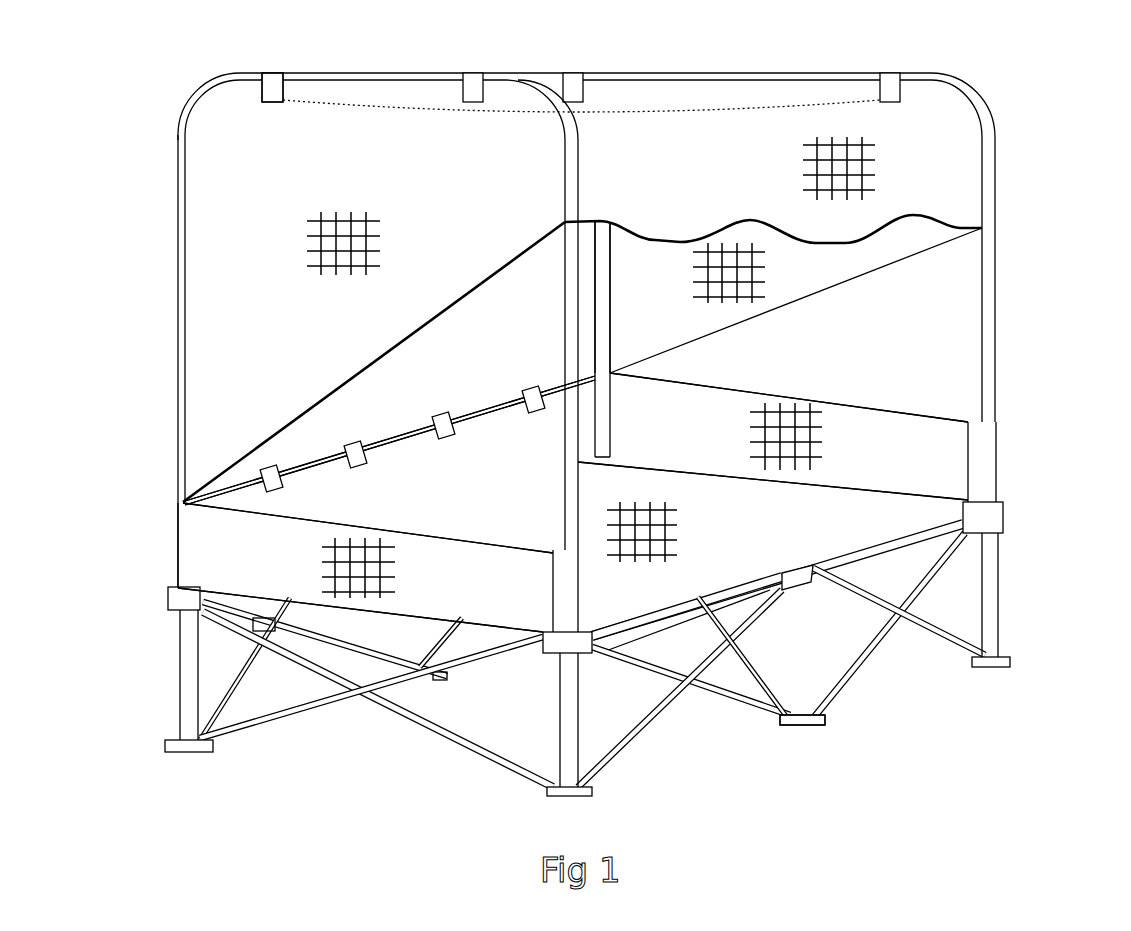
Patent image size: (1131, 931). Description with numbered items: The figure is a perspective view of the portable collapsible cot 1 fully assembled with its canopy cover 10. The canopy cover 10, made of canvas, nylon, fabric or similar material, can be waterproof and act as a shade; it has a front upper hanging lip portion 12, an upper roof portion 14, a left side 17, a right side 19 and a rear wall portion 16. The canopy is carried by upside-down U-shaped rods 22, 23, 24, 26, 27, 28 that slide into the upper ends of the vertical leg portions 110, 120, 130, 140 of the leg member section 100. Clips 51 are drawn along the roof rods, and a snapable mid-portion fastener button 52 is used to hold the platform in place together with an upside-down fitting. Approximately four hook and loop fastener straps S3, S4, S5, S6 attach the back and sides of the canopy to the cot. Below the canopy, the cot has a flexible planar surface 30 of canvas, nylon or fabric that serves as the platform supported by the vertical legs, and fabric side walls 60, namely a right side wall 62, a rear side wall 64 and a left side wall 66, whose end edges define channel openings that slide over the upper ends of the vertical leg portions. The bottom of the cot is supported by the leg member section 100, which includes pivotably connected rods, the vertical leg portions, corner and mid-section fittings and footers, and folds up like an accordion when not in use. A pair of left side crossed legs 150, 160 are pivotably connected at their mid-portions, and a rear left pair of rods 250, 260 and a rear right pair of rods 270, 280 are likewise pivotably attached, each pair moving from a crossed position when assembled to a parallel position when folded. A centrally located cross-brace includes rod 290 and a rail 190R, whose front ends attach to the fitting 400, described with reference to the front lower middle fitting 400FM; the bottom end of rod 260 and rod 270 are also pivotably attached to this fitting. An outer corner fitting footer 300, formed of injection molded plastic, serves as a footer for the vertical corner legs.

The cot 1 is at (146, 83).
The canopy cover 10 is at (143, 233).
The front upper hanging lip portion 12 is at (930, 152).
The upper roof portion 14 is at (637, 73).
The rear wall portion 16 is at (335, 428).
The left side 17 is at (410, 295).
The right side 19 is at (838, 266).
The U-shaped rod 22 is at (995, 276).
The U-shaped rod 23 is at (843, 73).
The U-shaped rod 24 is at (610, 292).
The U-shaped rod 26 is at (563, 320).
The U-shaped rod 27 is at (385, 73).
The U-shaped rod 28 is at (178, 326).
The flexible planar surface 30 is at (862, 530).
The clip 51 is at (303, 103).
The snapable mid-portion fastener button 52 is at (733, 108).
The side walls 60 is at (1046, 483).
The right side wall 62 is at (918, 452).
The rear side wall 64 is at (398, 472).
The left side wall 66 is at (215, 548).
The leg member section 100 is at (166, 667).
The vertical leg portion 110 is at (998, 588).
The vertical leg portion 120 is at (578, 690).
The vertical leg portion 130 is at (612, 433).
The vertical leg portion 140 is at (178, 690).
The left side crossed leg 150 is at (425, 722).
The left side crossed leg 160 is at (283, 720).
The right rail 190R is at (682, 638).
The rear left cross-brace rod 250 is at (672, 710).
The rear left cross-brace rod 260 is at (735, 697).
The rear right cross-brace rod 270 is at (860, 672).
The rear right cross-brace rod 280 is at (933, 637).
The middle cross-brace rod 290 is at (765, 663).
The outer corner fitting footer 300 is at (594, 792).
The fitting 400 is at (790, 585).
The front lower middle fitting 400FM is at (803, 726).
The hook and loop fastener strap S3 is at (281, 490).
The hook and loop fastener strap S4 is at (361, 466).
The hook and loop fastener strap S5 is at (445, 438).
The hook and loop fastener strap S6 is at (532, 412).